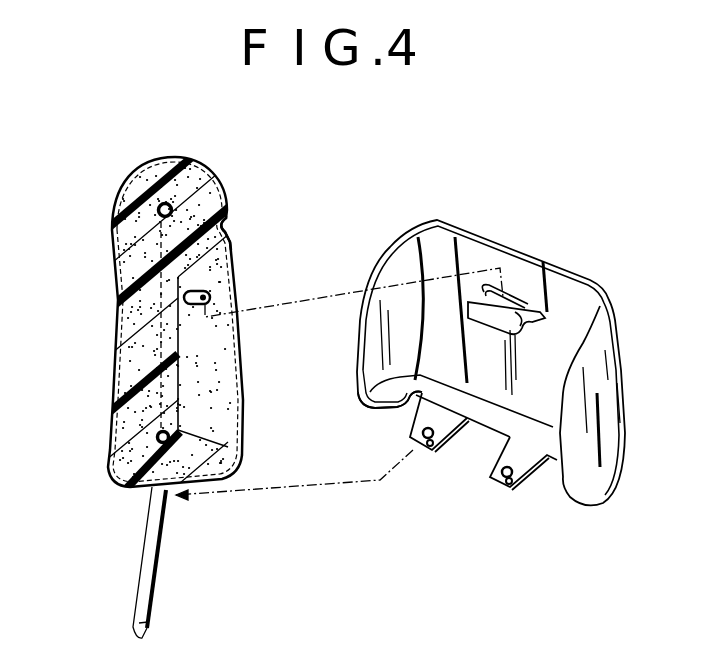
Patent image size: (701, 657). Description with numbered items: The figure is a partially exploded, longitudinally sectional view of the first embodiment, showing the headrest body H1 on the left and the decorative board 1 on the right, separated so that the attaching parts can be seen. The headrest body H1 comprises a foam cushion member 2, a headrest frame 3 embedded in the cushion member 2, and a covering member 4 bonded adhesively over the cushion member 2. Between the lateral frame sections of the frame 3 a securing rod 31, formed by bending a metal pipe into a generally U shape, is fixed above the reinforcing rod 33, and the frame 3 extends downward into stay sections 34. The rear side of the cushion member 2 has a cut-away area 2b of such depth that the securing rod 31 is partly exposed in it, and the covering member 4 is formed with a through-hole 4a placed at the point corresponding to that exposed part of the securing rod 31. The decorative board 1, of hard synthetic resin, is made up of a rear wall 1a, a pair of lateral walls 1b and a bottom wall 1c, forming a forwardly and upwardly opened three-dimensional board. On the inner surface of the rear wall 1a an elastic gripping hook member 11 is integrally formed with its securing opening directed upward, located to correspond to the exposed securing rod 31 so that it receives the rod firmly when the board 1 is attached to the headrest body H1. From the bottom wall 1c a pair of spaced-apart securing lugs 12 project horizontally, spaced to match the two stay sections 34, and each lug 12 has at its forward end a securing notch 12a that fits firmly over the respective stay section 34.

The headrest body H1 is at (110, 184).
The decorative board 1 is at (597, 283).
The rear wall 1a is at (443, 250).
The lateral wall 1b is at (397, 270).
The bottom wall 1c is at (422, 389).
The gripping hook member 11 is at (513, 293).
The securing lug 12 is at (451, 424).
The securing notch 12a is at (430, 444).
The foam cushion member 2 is at (115, 273).
The cut-away area 2b is at (223, 380).
The headrest frame 3 is at (170, 203).
The securing rod 31 is at (213, 295).
The reinforcing rod 33 is at (157, 437).
The stay section 34 is at (146, 550).
The covering member 4 is at (218, 187).
The through-hole 4a is at (230, 253).